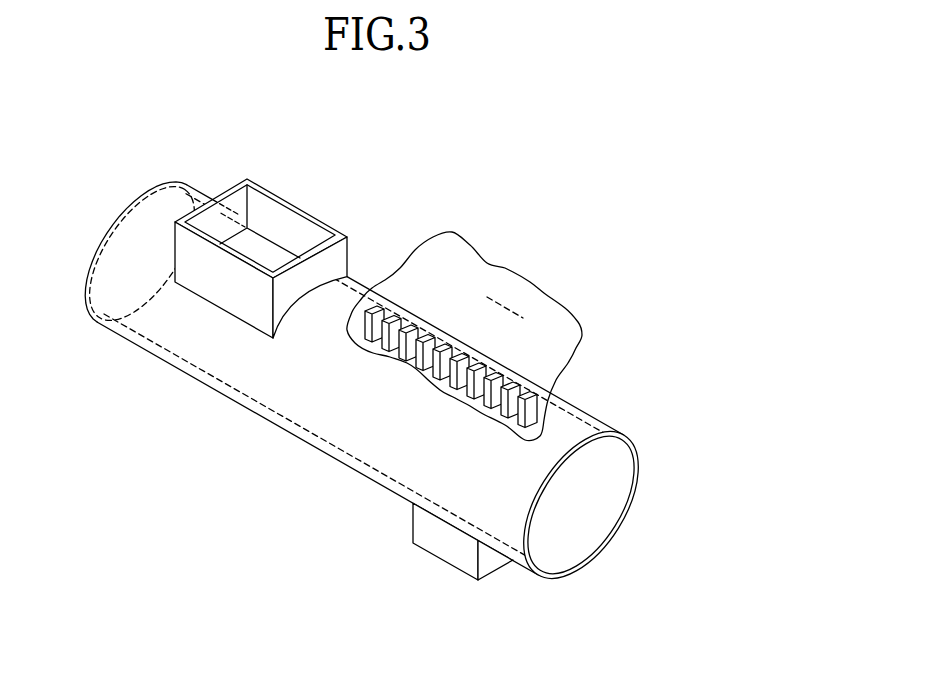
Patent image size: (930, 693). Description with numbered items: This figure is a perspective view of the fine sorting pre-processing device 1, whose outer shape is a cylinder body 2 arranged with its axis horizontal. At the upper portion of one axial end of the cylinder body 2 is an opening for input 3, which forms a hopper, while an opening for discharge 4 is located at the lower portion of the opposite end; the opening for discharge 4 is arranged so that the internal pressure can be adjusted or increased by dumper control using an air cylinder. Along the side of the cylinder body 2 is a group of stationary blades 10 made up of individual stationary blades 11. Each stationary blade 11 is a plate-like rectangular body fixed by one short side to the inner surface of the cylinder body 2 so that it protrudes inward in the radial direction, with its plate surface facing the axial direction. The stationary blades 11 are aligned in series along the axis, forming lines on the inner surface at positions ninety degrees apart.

The fine sorting pre-processing device 1 is at (407, 174).
The cylinder body 2 is at (177, 182).
The opening for input 3 is at (276, 191).
The opening for discharge 4 is at (505, 570).
The group of stationary blades 10 is at (464, 336).
The stationary blade 11 is at (385, 307).